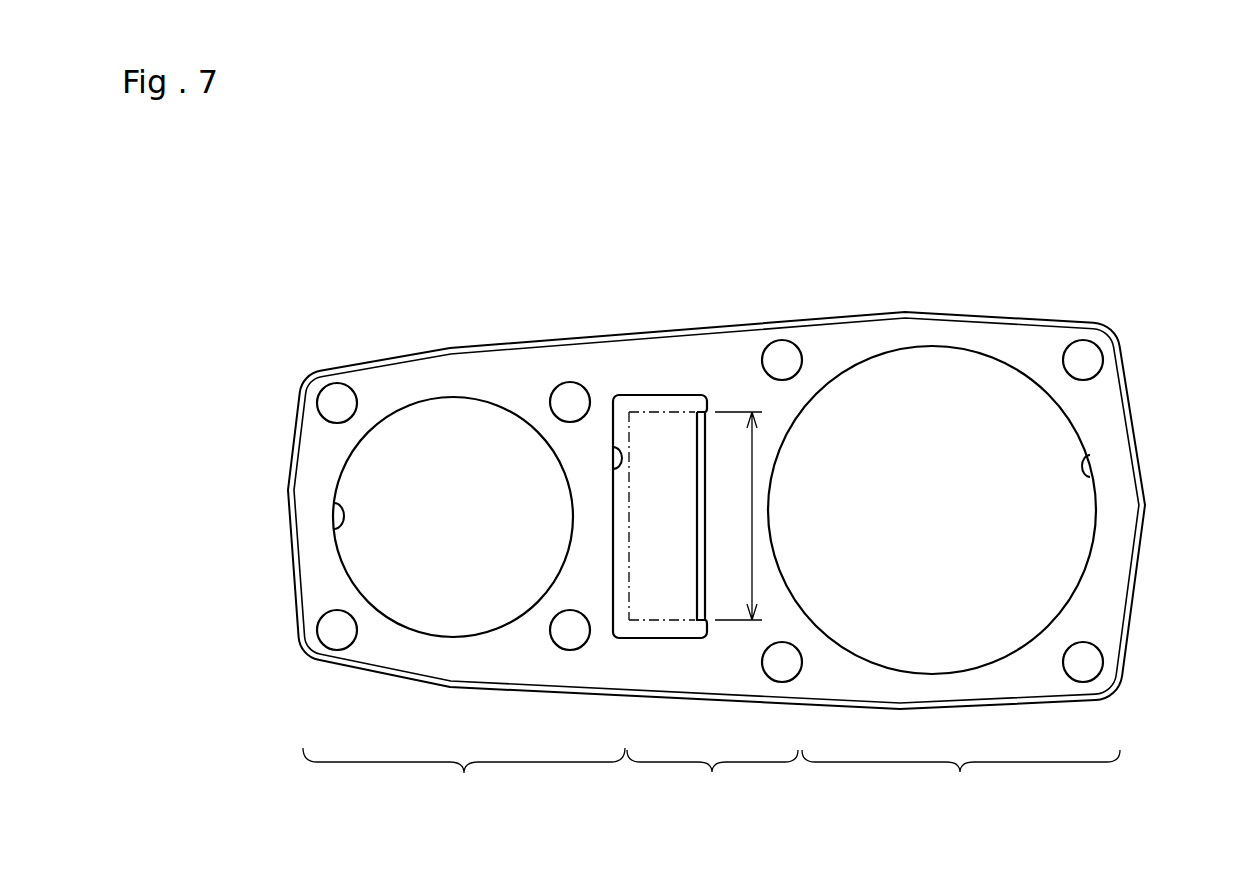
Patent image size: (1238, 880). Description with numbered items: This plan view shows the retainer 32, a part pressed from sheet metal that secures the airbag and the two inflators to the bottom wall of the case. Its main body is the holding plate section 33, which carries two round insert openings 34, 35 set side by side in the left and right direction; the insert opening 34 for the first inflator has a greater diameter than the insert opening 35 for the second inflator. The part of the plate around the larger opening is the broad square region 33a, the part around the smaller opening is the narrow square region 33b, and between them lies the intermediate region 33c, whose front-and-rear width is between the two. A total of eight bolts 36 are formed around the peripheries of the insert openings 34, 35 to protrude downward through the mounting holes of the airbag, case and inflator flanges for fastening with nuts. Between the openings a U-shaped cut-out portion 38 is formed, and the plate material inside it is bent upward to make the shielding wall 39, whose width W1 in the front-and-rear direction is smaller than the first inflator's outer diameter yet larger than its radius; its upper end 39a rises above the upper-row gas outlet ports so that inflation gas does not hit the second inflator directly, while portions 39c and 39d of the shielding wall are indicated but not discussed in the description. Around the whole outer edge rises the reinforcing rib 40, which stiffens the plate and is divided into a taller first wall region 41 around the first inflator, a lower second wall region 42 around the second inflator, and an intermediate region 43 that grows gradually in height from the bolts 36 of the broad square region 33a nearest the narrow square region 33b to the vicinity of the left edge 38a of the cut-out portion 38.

The retainer 32 is at (321, 281).
The holding plate section 33 is at (411, 367).
The broad square region 33a is at (1011, 333).
The narrow square region 33b is at (482, 365).
The intermediate region 33c is at (683, 343).
The insert opening 34 is at (1092, 470).
The insert opening 35 is at (336, 531).
The bolts 36 is at (327, 397).
The cut-out portion 38 is at (622, 404).
The left edge of the cut-out portion 38a is at (612, 461).
The shielding wall 39 is at (670, 538).
The upper end of the shielding wall 39a is at (630, 553).
The bead upper end 39c is at (701, 412).
The bead lower end 39d is at (700, 622).
The reinforcing rib 40 is at (289, 490).
The first wall region 41 is at (961, 778).
The second wall region 42 is at (464, 777).
The intermediate region 43 is at (712, 778).
The width of the shielding wall W1 is at (747, 538).